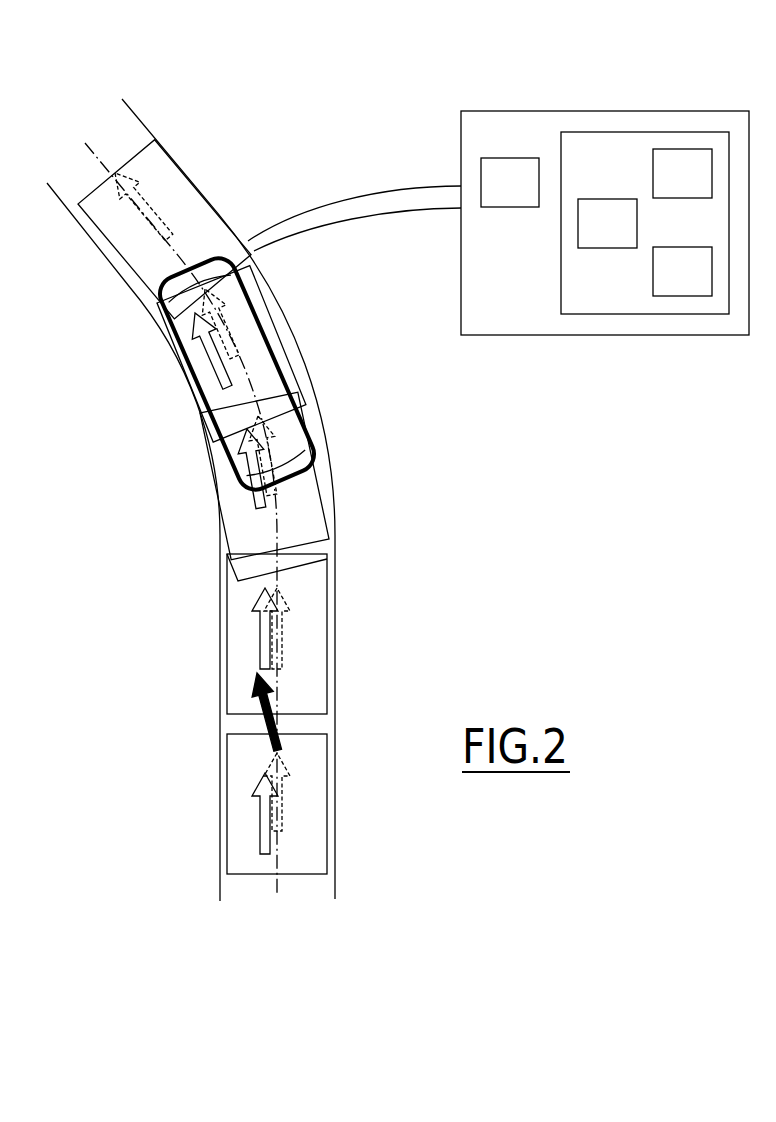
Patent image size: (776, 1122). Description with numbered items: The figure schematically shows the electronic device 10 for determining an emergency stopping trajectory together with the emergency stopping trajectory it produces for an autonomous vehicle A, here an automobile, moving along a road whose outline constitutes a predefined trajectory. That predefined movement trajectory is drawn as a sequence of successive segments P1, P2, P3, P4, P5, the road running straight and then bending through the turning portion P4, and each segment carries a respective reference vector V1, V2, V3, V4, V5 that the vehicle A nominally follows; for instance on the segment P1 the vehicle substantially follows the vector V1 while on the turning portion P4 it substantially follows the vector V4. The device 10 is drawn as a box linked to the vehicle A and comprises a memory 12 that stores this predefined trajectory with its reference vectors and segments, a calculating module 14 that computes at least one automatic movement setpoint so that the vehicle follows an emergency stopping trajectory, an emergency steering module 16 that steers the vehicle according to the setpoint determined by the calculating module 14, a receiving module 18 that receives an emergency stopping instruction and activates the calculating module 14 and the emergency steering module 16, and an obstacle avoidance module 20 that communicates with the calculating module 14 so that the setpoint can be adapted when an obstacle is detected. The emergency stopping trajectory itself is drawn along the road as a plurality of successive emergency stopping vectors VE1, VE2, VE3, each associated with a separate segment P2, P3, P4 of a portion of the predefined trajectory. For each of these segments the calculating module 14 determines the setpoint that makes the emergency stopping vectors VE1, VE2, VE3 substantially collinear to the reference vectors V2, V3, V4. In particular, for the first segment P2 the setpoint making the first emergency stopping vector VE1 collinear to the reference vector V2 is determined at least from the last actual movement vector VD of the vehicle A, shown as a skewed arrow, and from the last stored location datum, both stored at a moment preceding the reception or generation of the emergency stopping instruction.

The electronic device for determining an emergency stopping trajectory 10 is at (592, 108).
The memory 12 is at (672, 130).
The calculating module 14 is at (607, 223).
The emergency steering module 16 is at (682, 173).
The receiving module 18 is at (682, 271).
The obstacle avoidance module 20 is at (510, 182).
The autonomous vehicle A is at (168, 274).
The first segment P1 is at (332, 833).
The second segment P2 is at (335, 590).
The third segment P3 is at (323, 480).
The turning portion segment P4 is at (283, 330).
The fifth segment P5 is at (152, 155).
The reference vector V1 is at (285, 783).
The reference vector V2 is at (283, 630).
The reference vector V3 is at (259, 426).
The reference vector V4 is at (232, 283).
The reference vector V5 is at (150, 203).
The first emergency stopping vector VE1 is at (257, 630).
The emergency stopping vector VE2 is at (252, 503).
The emergency stopping vector VE3 is at (212, 352).
The last actual movement vector VD is at (253, 681).